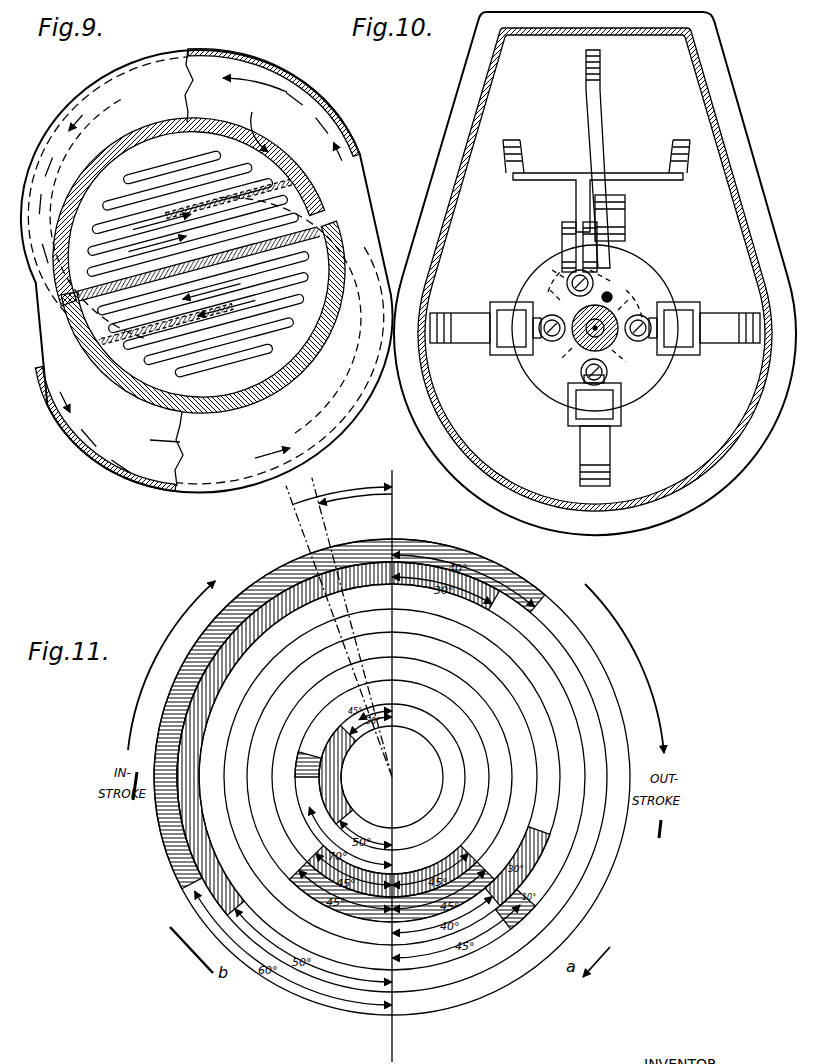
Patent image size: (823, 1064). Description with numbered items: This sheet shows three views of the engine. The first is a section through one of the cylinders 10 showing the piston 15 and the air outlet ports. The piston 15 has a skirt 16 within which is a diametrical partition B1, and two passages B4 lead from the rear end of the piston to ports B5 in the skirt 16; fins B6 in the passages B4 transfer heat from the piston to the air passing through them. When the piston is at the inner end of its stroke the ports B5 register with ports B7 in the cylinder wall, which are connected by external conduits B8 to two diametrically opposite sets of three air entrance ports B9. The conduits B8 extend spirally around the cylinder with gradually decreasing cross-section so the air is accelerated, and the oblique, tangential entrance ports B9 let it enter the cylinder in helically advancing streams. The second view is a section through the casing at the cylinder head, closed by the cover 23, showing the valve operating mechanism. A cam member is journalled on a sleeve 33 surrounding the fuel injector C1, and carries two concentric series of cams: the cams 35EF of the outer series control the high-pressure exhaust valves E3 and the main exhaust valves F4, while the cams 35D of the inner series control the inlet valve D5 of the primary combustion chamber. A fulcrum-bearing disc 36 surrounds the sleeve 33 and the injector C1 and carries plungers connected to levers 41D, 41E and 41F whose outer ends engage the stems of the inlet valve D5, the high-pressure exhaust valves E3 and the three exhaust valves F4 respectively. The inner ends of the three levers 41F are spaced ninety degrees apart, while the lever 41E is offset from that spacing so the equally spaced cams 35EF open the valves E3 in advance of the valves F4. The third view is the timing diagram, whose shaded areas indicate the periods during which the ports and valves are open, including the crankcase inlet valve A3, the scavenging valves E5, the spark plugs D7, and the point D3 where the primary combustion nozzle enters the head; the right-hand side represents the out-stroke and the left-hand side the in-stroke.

In FIG. 9, the external conduits B8 is at (322, 88).
In FIG. 9, the ports in the cylinder wall B7 is at (322, 142).
In FIG. 9, the ports in the skirt B5 is at (305, 188).
In FIG. 9, the diametrical partition B1 is at (338, 218).
In FIG. 9, the air entrance ports B9 is at (118, 124).
In FIG. 11, the air entrance ports B9 is at (392, 777).
In FIG. 9, the passages B4 is at (222, 198).
In FIG. 9, the fins B6 is at (190, 212).
In FIG. 9, the skirt 16 is at (300, 360).
In FIG. 9, the piston 15 is at (214, 414).
In FIG. 9, the cylinders 10 is at (192, 420).
In FIG. 10, the cover 23 is at (696, 484).
In FIG. 10, the fulcrum-bearing disc 36 is at (514, 366).
In FIG. 10, the injector C1 is at (586, 352).
In FIG. 11, the injector C1 is at (392, 777).
In FIG. 10, the cams of the inner series 35D is at (574, 354).
In FIG. 10, the sleeve 33 is at (668, 344).
In FIG. 10, the levers 41F is at (470, 312).
In FIG. 10, the lever 41E is at (574, 208).
In FIG. 10, the cams of the outer series 35EF is at (556, 276).
In FIG. 10, the lever 41D is at (605, 150).
In FIG. 11, the spark plugs D7 is at (339, 624).
In FIG. 11, the nozzle entry point in the cylinder head D3 is at (392, 777).
In FIG. 11, the main exhaust valves F4 is at (392, 777).
In FIG. 11, the high-pressure exhaust valves E3 is at (392, 777).
In FIG. 11, the inlet valve D5 is at (392, 777).
In FIG. 11, the valves E5 is at (392, 777).
In FIG. 11, the inlet valve A3 is at (392, 777).